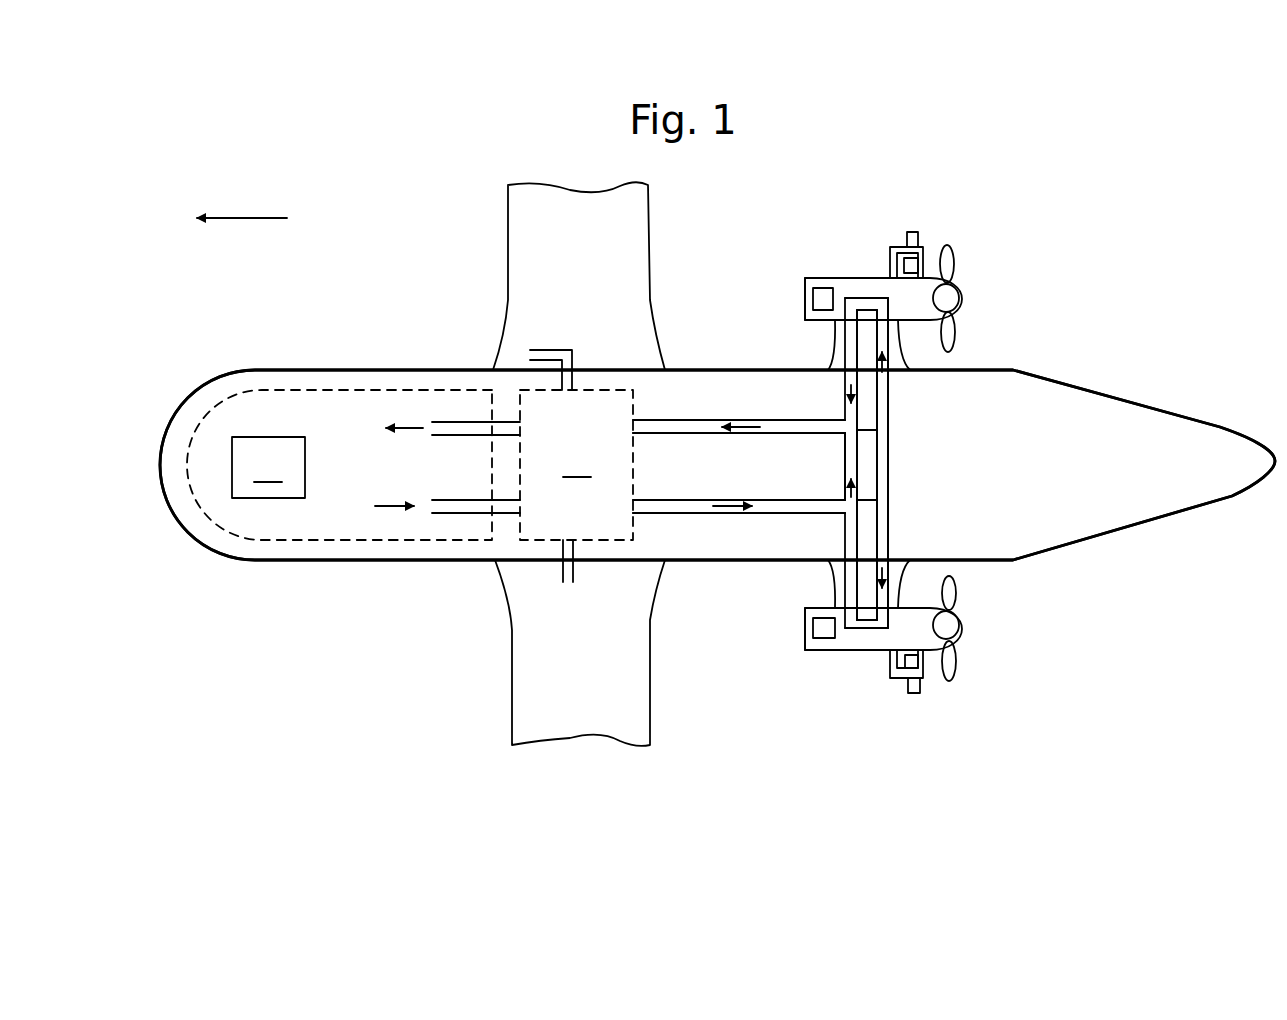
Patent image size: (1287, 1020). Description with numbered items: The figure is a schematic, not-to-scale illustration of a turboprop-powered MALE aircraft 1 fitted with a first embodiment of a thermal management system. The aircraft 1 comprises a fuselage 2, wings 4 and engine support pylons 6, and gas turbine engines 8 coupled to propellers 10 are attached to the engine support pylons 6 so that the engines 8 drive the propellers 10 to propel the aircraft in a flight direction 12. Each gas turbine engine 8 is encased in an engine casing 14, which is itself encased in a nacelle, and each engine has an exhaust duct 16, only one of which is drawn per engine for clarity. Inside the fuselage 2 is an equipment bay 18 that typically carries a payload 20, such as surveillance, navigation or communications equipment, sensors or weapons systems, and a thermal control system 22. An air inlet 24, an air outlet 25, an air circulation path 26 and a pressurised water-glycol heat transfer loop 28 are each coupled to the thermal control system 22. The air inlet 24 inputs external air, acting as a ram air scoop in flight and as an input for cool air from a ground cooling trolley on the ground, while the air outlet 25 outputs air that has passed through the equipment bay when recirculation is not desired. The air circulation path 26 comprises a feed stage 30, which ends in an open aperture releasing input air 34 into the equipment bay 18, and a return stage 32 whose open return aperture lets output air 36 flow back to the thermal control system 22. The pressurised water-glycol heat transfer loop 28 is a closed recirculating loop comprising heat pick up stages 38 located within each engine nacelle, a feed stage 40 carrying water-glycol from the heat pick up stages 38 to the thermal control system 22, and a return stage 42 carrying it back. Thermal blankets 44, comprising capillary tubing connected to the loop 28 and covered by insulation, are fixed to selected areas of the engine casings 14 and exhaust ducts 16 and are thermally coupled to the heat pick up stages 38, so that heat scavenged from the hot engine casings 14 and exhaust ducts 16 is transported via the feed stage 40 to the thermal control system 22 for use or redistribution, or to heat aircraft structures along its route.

The turboprop-powered MALE aircraft 1 is at (1042, 198).
The fuselage 2 is at (323, 372).
The wings 4 is at (523, 212).
The engine support pylons 6 is at (897, 356).
The gas turbine engines 8 is at (843, 285).
The propellers 10 is at (950, 268).
The flight direction 12 is at (243, 218).
The engine casing 14 is at (805, 313).
The exhaust duct 16 is at (893, 247).
The equipment bay 18 is at (243, 400).
The payload 20 is at (268, 467).
The thermal control system 22 is at (576, 465).
The air inlet 24 is at (545, 347).
The air outlet 25 is at (565, 582).
The air circulation path 26 is at (440, 421).
The pressurised water-glycol heat transfer loop 28 is at (882, 460).
The feed stage 30 is at (475, 421).
The return stage 32 is at (465, 513).
The input air 34 is at (407, 422).
The output air 36 is at (387, 508).
The heat pick up stages 38 is at (872, 300).
The feed stage 40 is at (847, 490).
The return stage 42 is at (890, 535).
The thermal blankets 44 is at (818, 296).